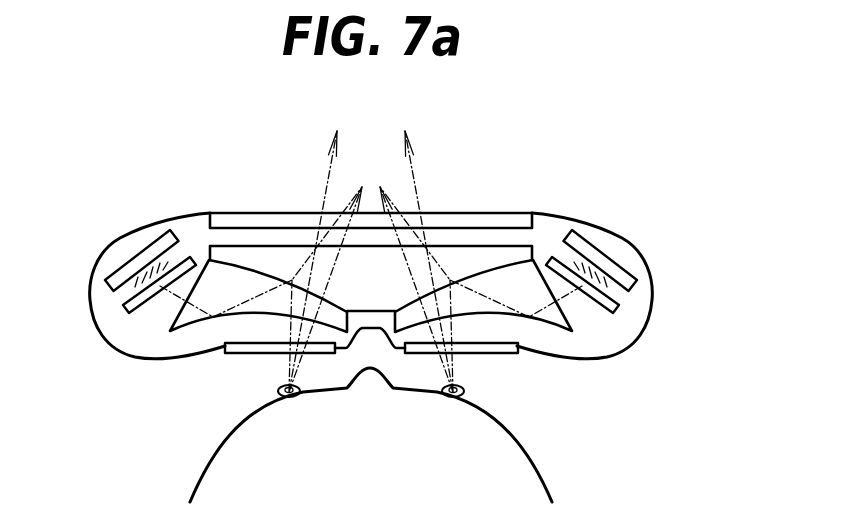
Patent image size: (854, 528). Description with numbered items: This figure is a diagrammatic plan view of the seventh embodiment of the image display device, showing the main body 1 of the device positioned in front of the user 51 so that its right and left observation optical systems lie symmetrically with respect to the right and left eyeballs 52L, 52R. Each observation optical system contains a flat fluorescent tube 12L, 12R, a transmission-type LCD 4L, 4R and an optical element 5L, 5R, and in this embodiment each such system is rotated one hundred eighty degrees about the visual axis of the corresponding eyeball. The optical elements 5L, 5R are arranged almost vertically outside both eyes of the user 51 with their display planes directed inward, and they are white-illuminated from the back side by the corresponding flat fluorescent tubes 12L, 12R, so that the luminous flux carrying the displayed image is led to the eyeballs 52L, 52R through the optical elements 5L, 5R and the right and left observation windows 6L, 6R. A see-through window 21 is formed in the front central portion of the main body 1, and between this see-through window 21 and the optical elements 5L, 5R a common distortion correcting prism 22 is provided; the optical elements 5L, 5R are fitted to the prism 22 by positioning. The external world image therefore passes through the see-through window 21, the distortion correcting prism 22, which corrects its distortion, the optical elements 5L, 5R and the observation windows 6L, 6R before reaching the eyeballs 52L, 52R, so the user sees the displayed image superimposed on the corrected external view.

The main body of the image display device 1 is at (637, 233).
The see-through window 21 is at (463, 213).
The distortion correcting prism 22 is at (297, 257).
The left flat fluorescent tube 12L is at (135, 265).
The right flat fluorescent tube 12R is at (632, 273).
The left LCD 4L is at (133, 300).
The right LCD 4R is at (623, 300).
The left optical element 5L is at (182, 325).
The right optical element 5R is at (548, 316).
The left observation window 6L is at (240, 347).
The right observation window 6R is at (490, 350).
The user 51 is at (227, 485).
The left eyeball 52L is at (278, 396).
The right eyeball 52R is at (462, 398).